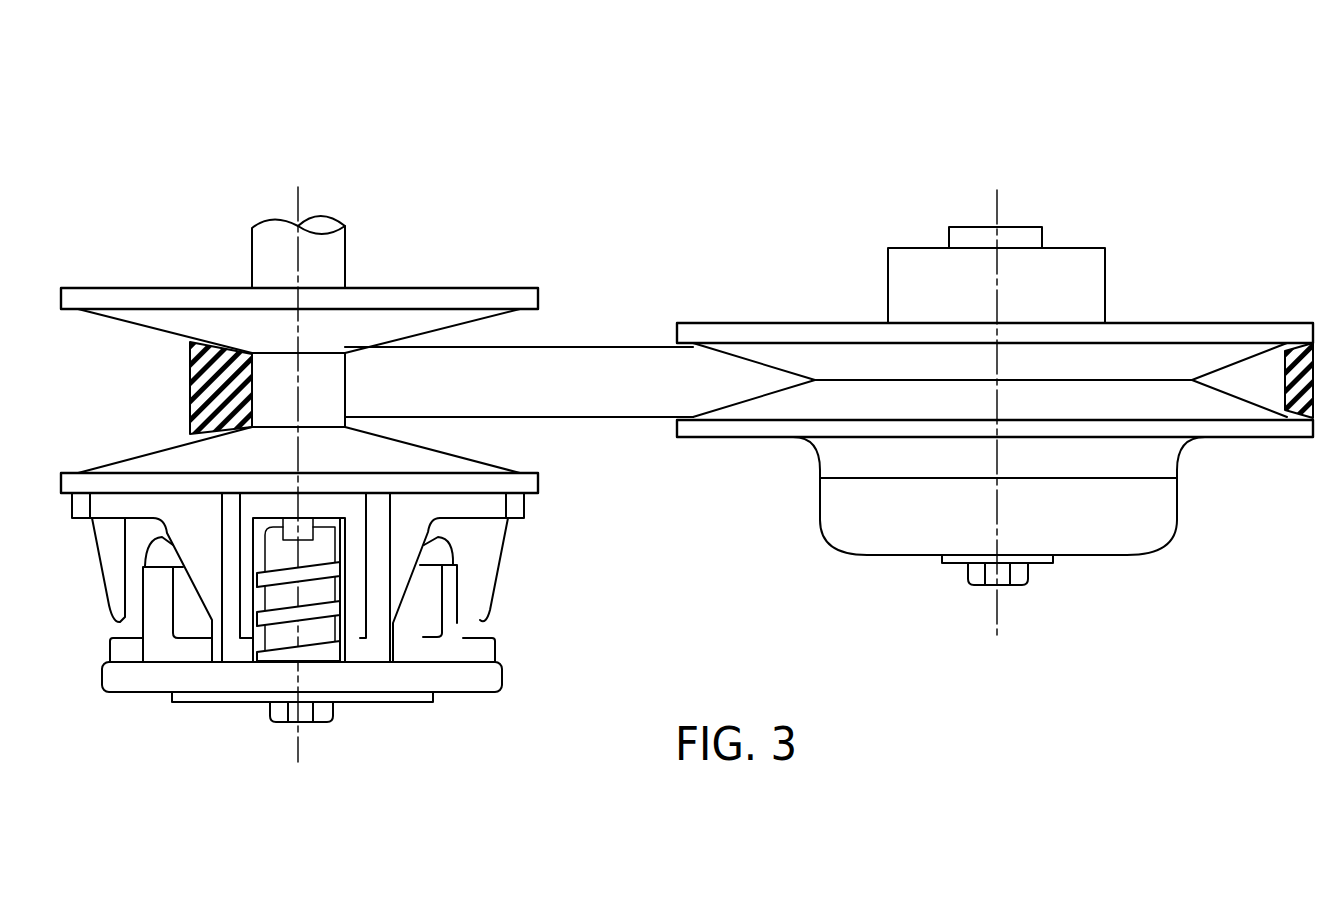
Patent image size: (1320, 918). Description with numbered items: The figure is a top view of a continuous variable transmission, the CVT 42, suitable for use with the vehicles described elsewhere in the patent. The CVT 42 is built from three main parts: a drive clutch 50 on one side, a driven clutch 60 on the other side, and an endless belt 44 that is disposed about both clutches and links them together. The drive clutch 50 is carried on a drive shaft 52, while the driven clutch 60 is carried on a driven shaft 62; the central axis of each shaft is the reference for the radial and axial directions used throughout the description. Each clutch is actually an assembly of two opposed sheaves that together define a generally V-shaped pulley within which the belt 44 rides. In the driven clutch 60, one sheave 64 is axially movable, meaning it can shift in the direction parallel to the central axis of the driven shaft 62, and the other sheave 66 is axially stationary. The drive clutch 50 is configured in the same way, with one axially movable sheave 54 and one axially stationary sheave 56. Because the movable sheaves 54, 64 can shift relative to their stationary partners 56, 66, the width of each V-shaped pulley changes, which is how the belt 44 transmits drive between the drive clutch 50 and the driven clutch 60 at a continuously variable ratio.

The CVT 42 is at (608, 130).
The endless belt 44 is at (597, 419).
The drive clutch 50 is at (78, 706).
The drive shaft 52 is at (345, 256).
The axially movable sheave 54 is at (146, 455).
The axially stationary sheave 56 is at (138, 288).
The driven clutch 60 is at (1127, 611).
The driven shaft 62 is at (1044, 243).
The axially movable sheave 64 is at (1215, 323).
The axially stationary sheave 66 is at (730, 440).